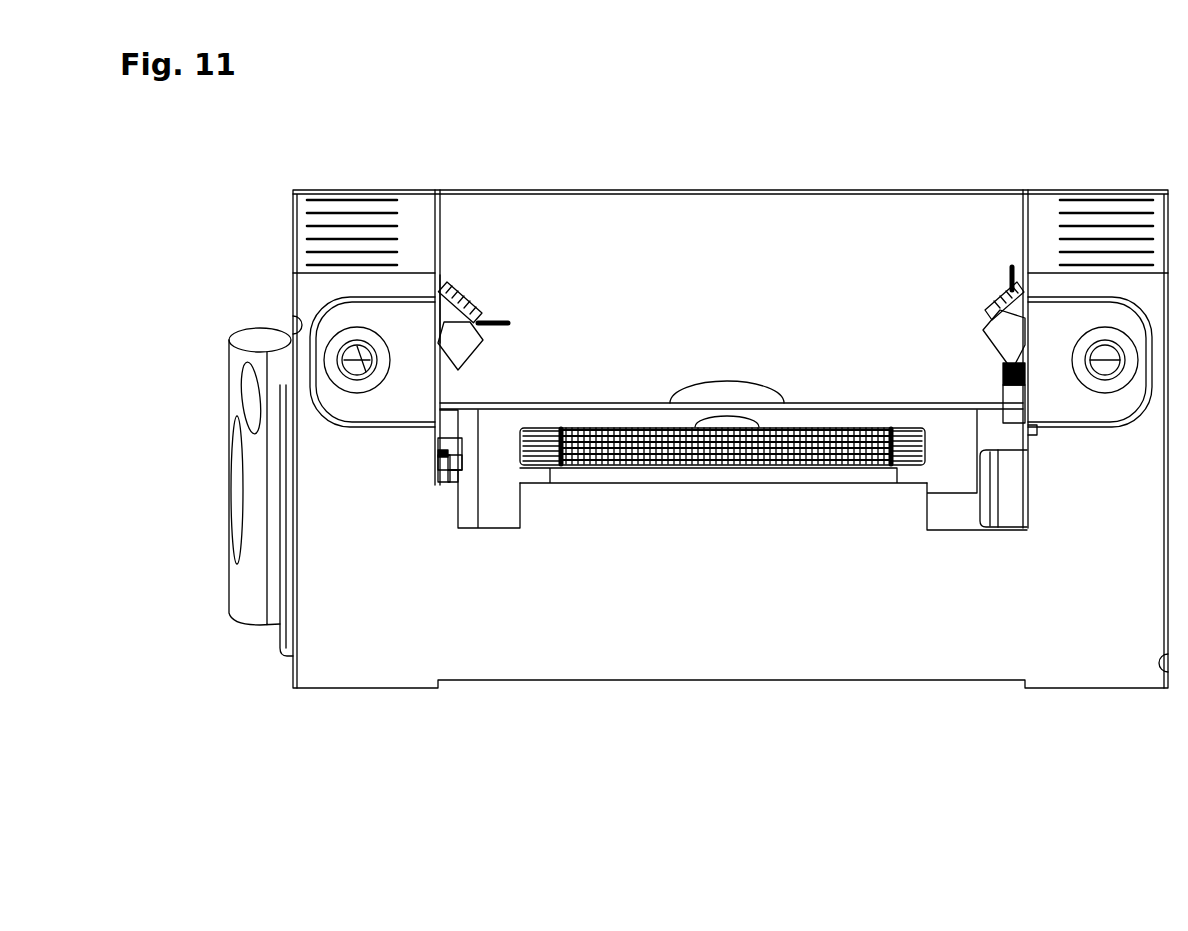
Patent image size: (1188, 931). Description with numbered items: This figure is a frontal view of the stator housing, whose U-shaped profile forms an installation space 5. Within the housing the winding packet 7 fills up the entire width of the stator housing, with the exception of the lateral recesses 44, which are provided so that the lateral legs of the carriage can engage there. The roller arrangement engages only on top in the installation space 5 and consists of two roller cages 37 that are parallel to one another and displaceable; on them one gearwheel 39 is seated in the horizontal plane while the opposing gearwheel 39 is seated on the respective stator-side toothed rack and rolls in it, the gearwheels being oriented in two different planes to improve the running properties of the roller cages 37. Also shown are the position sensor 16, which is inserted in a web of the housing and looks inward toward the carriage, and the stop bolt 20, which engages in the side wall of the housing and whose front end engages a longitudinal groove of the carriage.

The installation space 5 is at (674, 267).
The winding packet 7 is at (748, 422).
The position sensor 16 is at (447, 483).
The stop bolt 20 is at (1000, 493).
The roller cage 37 is at (457, 287).
The gearwheel 39 is at (502, 317).
The lateral recess 44 is at (484, 500).